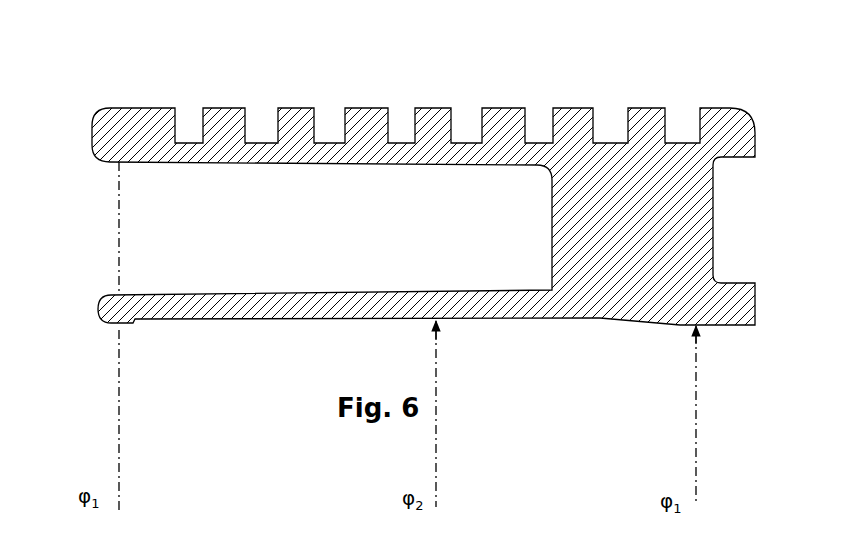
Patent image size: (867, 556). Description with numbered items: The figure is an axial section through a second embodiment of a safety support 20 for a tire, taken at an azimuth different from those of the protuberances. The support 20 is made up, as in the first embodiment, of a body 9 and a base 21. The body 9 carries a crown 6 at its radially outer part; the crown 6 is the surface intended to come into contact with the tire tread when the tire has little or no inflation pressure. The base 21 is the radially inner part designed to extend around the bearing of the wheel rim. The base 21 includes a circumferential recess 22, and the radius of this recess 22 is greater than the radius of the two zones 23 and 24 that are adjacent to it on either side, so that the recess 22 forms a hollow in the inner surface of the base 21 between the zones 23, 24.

The support 20 is at (167, 78).
The crown 6 is at (503, 130).
The body 9 is at (258, 232).
The base 21 is at (497, 302).
The circumferential recess 22 is at (325, 319).
The zone 23 is at (119, 324).
The zone 24 is at (712, 326).